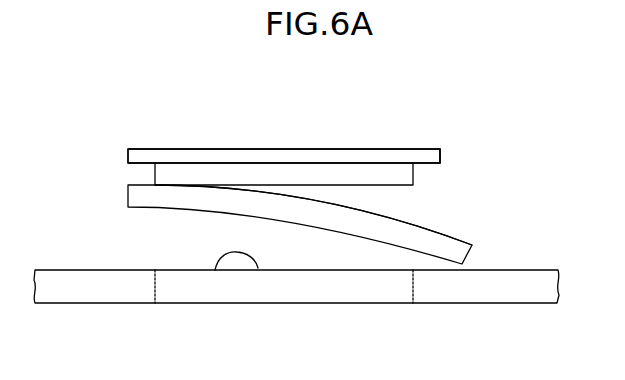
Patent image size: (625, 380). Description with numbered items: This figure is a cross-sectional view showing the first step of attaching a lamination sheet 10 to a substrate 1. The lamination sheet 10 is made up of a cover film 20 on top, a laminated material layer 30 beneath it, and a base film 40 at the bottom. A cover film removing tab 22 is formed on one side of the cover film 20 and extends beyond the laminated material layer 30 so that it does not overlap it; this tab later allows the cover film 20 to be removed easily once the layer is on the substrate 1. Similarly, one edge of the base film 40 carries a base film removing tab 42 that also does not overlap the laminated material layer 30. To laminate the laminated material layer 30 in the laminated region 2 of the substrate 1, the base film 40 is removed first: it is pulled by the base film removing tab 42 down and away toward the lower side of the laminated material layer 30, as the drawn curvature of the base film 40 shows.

The substrate 1 is at (475, 293).
The laminated region 2 is at (215, 270).
The lamination sheet 10 is at (128, 176).
The cover film 20 is at (438, 164).
The cover film removing tab 22 is at (425, 149).
The laminated material layer 30 is at (204, 170).
The base film 40 is at (462, 250).
The base film removing tab 42 is at (442, 235).